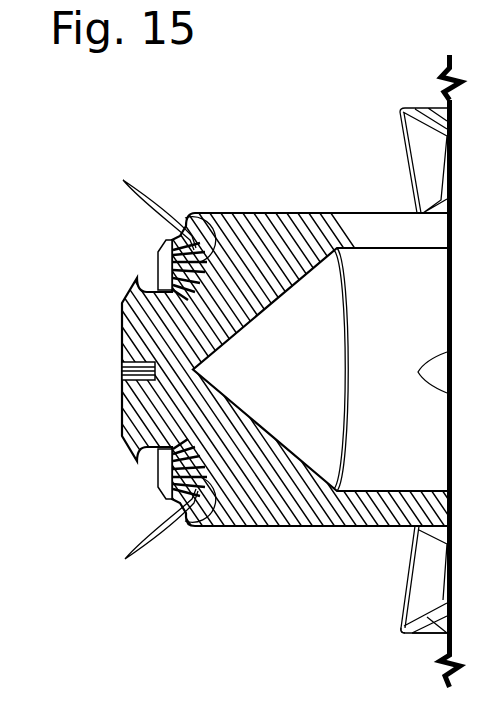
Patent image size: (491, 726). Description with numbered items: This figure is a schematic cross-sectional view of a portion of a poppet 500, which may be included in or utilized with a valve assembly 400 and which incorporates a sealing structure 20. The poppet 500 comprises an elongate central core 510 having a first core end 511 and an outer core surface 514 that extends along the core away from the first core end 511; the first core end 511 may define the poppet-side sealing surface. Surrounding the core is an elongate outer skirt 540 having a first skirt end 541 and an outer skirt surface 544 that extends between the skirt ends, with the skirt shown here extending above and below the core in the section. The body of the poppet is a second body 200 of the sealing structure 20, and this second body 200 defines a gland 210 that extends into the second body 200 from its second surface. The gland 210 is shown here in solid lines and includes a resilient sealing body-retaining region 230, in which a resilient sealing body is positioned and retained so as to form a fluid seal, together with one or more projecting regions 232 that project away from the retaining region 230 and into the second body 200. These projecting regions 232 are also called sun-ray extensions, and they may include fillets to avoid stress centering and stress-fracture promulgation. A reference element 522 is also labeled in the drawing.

The valve assembly 400 is at (245, 377).
The sealing structure 20 is at (135, 346).
The poppet 500 is at (216, 182).
The second body 200 is at (275, 212).
The upper flange 522 is at (425, 145).
The projecting region 232 is at (147, 372).
The gland 210 is at (135, 372).
The resilient sealing body-retaining region 230 is at (159, 278).
The first core end 511 is at (122, 395).
The elongate central core 510 is at (233, 532).
The outer core surface 514 is at (299, 528).
The first skirt end 541 is at (402, 628).
The elongate outer skirt 540 is at (410, 641).
The outer skirt surface 544 is at (423, 640).